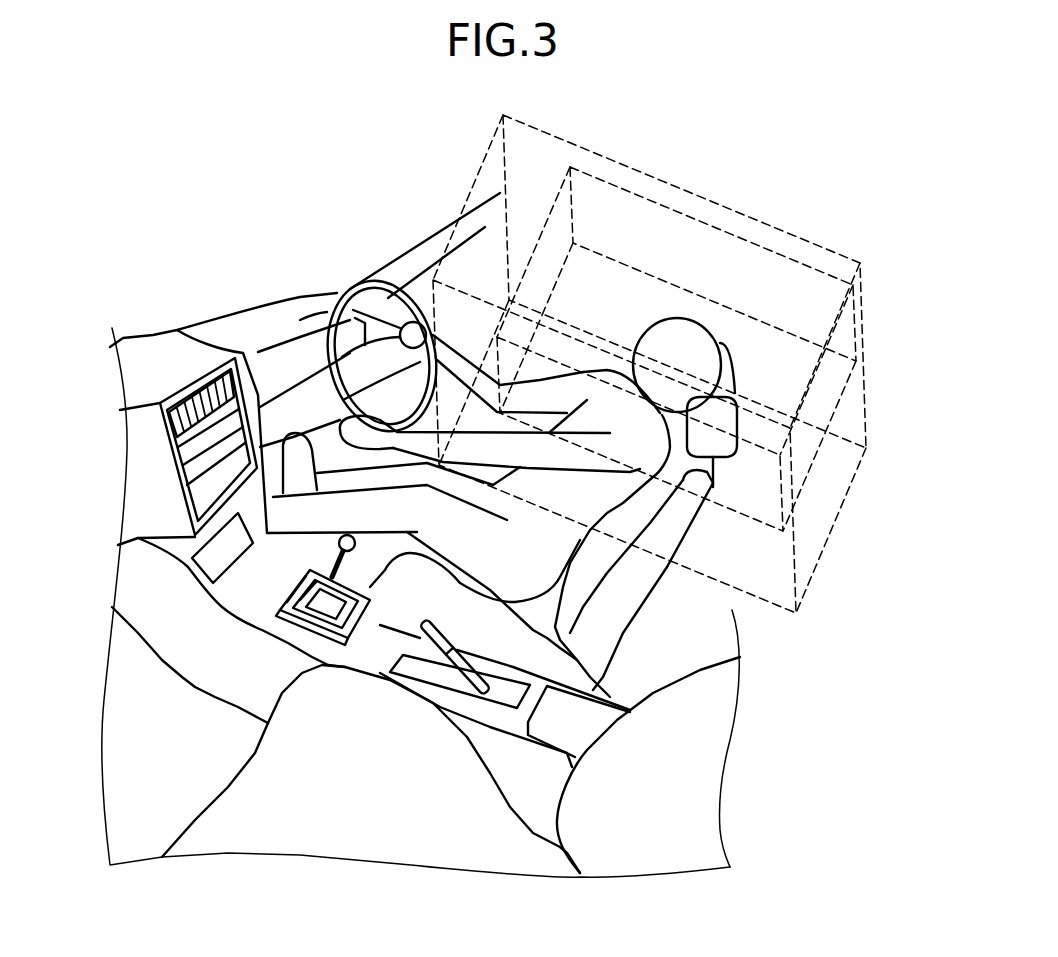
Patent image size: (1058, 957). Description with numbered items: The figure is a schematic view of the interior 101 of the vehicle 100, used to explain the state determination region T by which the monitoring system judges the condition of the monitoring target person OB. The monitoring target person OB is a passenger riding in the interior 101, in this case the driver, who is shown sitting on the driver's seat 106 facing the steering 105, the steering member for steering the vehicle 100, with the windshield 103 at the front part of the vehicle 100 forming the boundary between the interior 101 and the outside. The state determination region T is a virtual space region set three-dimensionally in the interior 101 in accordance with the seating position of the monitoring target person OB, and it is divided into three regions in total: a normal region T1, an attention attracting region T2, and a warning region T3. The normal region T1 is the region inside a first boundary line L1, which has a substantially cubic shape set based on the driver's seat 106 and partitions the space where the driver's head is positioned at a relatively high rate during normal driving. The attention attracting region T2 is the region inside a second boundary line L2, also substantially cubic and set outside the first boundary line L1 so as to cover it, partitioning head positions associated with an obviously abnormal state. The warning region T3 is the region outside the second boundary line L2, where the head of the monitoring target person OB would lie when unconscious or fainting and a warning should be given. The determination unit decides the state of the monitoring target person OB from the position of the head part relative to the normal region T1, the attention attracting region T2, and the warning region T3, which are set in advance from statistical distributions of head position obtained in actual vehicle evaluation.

The vehicle 100 is at (108, 453).
The interior 101 is at (151, 480).
The windshield 103 is at (319, 263).
The steering 105 is at (329, 380).
The driver's seat 106 is at (423, 591).
The monitoring target person OB is at (523, 571).
The first boundary line L1 is at (765, 247).
The second boundary line L2 is at (867, 377).
The normal region T1 is at (816, 403).
The attention attracting region T2 is at (759, 577).
The warning region T3 is at (712, 628).
The state determination region T is at (923, 418).